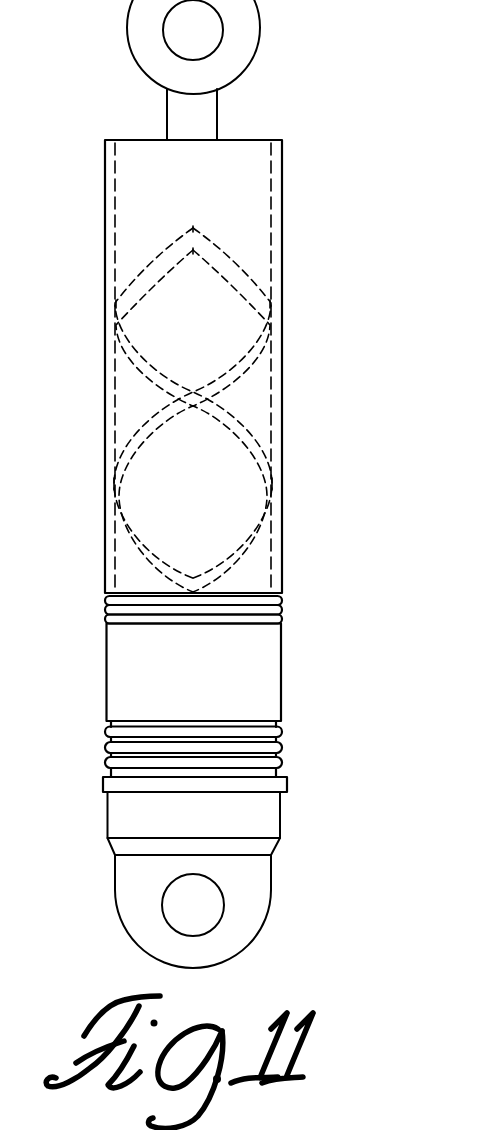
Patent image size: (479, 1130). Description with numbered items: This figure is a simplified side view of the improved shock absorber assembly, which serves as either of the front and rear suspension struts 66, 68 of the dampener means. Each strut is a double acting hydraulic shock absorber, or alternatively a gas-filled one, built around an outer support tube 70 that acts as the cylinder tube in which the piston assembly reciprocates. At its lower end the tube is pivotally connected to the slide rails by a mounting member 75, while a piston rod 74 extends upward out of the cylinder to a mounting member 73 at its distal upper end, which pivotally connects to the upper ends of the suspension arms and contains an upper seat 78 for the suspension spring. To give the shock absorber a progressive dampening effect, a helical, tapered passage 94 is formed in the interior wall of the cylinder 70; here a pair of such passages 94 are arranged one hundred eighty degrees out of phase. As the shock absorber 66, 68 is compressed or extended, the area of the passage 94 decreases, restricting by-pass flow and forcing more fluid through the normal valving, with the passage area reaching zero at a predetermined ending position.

The outer support tube 70 is at (282, 186).
The mounting member 73 is at (253, 52).
The piston rod 74 is at (207, 117).
The mounting member 75 is at (262, 892).
The upper seat 78 is at (173, 37).
The helical tapered passage 94 is at (240, 271).
The front suspension strut 66 is at (248, 694).
The rear suspension strut 68 is at (274, 667).